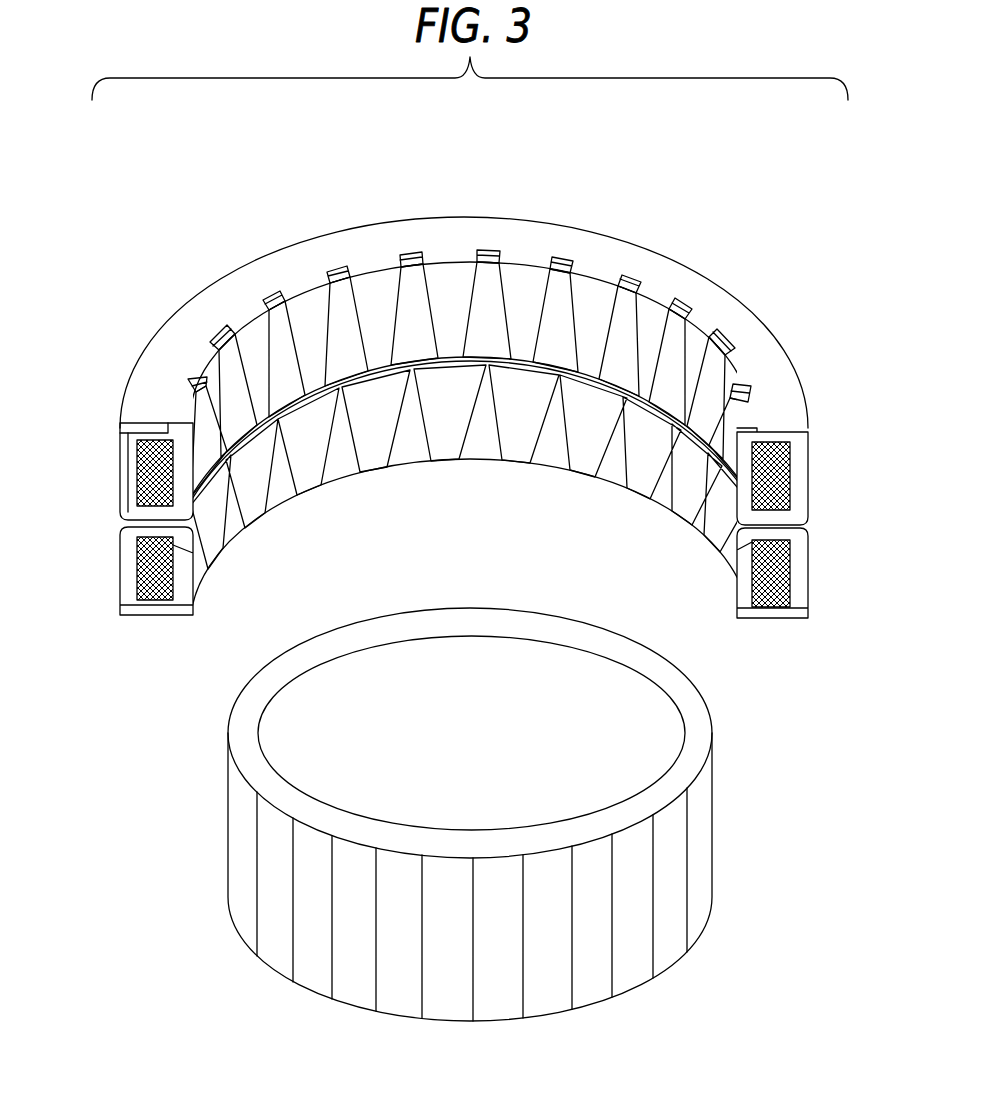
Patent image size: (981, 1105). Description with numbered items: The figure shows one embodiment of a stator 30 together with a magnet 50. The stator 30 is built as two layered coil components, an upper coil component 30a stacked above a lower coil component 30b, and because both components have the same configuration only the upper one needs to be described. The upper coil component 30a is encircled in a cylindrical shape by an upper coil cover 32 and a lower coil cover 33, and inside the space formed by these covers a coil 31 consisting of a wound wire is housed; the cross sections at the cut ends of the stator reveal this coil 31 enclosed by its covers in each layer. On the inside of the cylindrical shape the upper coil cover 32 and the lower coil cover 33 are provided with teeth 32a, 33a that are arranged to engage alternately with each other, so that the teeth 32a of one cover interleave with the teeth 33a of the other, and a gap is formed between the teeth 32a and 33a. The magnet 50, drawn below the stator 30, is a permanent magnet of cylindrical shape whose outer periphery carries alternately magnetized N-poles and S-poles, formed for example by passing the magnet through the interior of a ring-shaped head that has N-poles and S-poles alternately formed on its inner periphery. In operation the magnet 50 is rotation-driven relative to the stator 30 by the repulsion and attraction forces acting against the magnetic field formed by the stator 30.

The stator 30 is at (732, 234).
The upper coil component 30a is at (783, 411).
The lower coil component 30b is at (800, 552).
The coil 31 is at (137, 484).
The upper coil cover 32 is at (130, 432).
The teeth 32a is at (217, 382).
The lower coil cover 33 is at (127, 468).
The teeth 33a is at (240, 378).
The magnet 50 is at (695, 716).